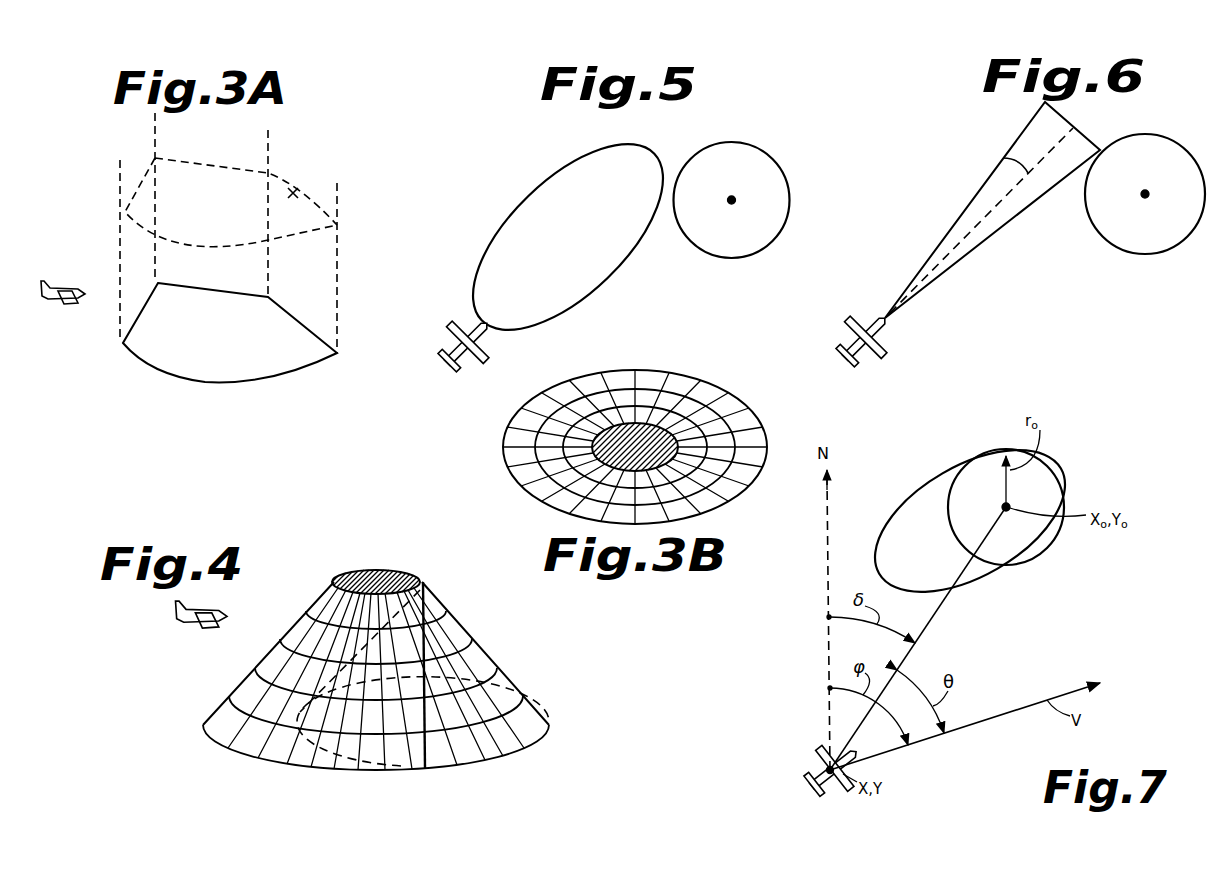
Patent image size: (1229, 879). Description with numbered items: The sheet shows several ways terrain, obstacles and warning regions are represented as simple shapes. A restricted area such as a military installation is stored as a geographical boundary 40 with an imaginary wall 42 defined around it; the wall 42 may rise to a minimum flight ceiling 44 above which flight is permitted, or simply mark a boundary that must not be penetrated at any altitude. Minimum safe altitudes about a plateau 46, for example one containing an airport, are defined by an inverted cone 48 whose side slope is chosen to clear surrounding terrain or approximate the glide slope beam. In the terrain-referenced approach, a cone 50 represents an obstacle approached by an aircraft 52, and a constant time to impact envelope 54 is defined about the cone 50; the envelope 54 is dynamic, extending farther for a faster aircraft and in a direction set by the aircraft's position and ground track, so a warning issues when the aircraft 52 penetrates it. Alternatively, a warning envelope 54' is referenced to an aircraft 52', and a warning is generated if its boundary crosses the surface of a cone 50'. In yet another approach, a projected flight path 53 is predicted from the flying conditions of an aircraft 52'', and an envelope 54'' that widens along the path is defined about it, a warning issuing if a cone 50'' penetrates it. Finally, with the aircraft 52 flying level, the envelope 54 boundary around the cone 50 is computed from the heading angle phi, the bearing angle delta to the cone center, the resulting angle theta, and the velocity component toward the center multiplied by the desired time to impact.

In FIG. 3A, the geographical boundary 40 is at (173, 370).
In FIG. 3A, the imaginary wall 42 is at (120, 176).
In FIG. 3A, the minimum flight ceiling 44 is at (293, 193).
In FIG. 3B, the plateau 46 is at (649, 423).
In FIG. 3B, the inverted cone 48 is at (503, 460).
In FIG. 4, the cone 50 is at (423, 678).
In FIG. 7, the cone 50 is at (1024, 503).
In FIG. 4, the aircraft 52 is at (197, 634).
In FIG. 7, the aircraft 52 is at (809, 768).
In FIG. 6, the projected flight path 53 is at (1003, 158).
In FIG. 4, the constant time to impact envelope 54 is at (376, 656).
In FIG. 7, the constant time to impact envelope 54 is at (970, 521).
In FIG. 5, the warning envelope 54' is at (568, 237).
In FIG. 5, the cone 50' is at (732, 187).
In FIG. 5, the aircraft 52' is at (457, 338).
In FIG. 6, the envelope 54'' is at (992, 210).
In FIG. 6, the cone 50'' is at (1145, 183).
In FIG. 6, the aircraft 52'' is at (862, 324).